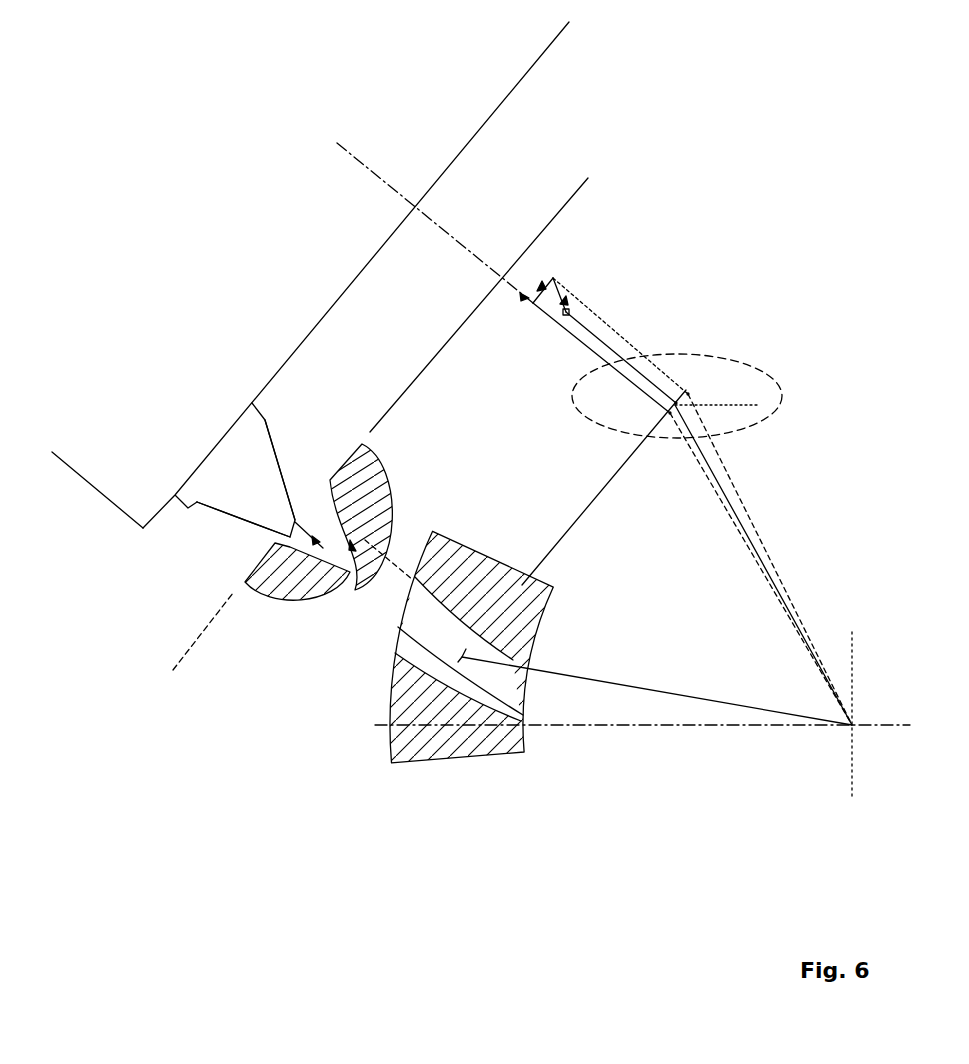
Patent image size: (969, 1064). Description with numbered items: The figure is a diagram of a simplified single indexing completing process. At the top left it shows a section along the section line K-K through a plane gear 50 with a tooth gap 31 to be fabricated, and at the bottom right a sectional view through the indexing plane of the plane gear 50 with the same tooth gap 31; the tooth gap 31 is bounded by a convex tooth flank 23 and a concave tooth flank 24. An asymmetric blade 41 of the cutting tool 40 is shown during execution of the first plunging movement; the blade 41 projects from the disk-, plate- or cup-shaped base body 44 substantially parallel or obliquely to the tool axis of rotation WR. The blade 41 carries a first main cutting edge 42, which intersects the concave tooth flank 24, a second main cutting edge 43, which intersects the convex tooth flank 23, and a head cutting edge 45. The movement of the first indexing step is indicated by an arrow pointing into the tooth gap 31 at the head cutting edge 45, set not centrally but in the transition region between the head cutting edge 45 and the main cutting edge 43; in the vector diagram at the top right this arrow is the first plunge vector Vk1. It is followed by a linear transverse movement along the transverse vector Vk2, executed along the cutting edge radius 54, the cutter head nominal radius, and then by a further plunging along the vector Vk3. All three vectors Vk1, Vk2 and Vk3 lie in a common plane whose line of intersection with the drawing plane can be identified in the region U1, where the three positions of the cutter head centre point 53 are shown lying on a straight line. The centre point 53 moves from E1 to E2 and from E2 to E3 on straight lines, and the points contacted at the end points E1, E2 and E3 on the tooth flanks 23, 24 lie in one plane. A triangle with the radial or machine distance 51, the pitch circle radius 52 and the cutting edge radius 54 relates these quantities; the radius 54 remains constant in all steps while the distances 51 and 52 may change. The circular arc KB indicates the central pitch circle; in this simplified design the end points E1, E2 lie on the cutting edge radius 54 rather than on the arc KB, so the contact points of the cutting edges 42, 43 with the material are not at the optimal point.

The cutting tool 40 is at (166, 384).
The blade 41 is at (250, 487).
The first main cutting edge 42 is at (220, 512).
The second main cutting edge 43 is at (273, 456).
The base body 44 is at (87, 487).
The head cutting edge 45 is at (290, 531).
The convex tooth flank 23 is at (330, 482).
The concave tooth flank 24 is at (293, 545).
The plane gear 50 is at (390, 500).
The tooth gap 31 is at (527, 697).
The radial or machine distance 51 is at (724, 493).
The pitch circle radius 52 is at (637, 668).
The cutter head centre point 53 is at (677, 405).
The cutting edge radius 54 is at (597, 497).
The circular arc of the central pitch circle KB is at (460, 768).
The section line K is at (385, 475).
The rotation axis RA is at (852, 727).
The tool axis of rotation WR is at (451, 275).
The region U1 is at (782, 392).
The end point E1 is at (533, 305).
The end point E2 is at (553, 276).
The end point E3 is at (569, 313).
The first plunge vector Vk1 is at (524, 297).
The transverse vector Vk2 is at (540, 284).
The plunge vector Vk3 is at (564, 300).